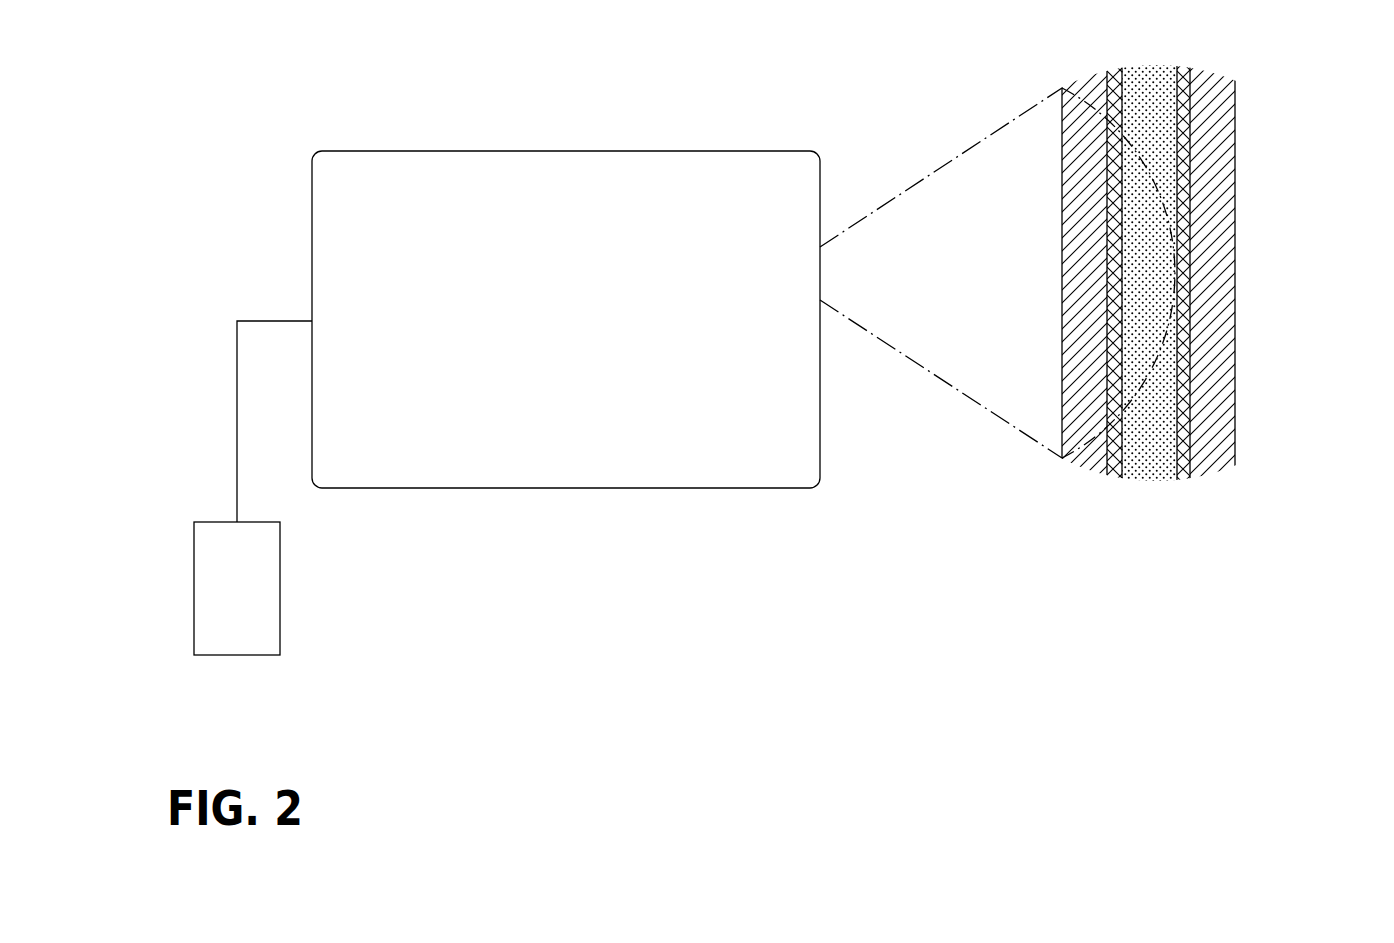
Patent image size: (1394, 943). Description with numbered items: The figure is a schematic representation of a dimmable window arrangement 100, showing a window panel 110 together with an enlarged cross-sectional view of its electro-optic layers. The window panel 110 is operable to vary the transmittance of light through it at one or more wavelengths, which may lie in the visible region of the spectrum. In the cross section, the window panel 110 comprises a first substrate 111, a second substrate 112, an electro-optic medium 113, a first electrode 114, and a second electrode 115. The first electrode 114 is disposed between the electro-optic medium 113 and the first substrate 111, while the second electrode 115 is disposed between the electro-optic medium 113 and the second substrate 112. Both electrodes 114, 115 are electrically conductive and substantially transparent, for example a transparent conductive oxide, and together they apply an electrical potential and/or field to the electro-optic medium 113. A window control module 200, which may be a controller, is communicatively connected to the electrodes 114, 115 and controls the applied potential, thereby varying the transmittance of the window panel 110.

The window system 100 is at (360, 142).
The window panel 110 is at (608, 204).
The first substrate 111 is at (1085, 176).
The second substrate 112 is at (1210, 247).
The electro-optic medium 113 is at (1147, 294).
The first electrode 114 is at (1110, 227).
The second electrode 115 is at (1187, 308).
The window control module 200 is at (253, 645).